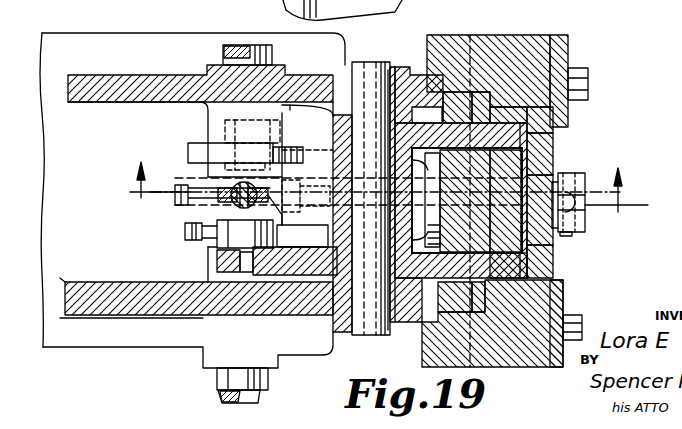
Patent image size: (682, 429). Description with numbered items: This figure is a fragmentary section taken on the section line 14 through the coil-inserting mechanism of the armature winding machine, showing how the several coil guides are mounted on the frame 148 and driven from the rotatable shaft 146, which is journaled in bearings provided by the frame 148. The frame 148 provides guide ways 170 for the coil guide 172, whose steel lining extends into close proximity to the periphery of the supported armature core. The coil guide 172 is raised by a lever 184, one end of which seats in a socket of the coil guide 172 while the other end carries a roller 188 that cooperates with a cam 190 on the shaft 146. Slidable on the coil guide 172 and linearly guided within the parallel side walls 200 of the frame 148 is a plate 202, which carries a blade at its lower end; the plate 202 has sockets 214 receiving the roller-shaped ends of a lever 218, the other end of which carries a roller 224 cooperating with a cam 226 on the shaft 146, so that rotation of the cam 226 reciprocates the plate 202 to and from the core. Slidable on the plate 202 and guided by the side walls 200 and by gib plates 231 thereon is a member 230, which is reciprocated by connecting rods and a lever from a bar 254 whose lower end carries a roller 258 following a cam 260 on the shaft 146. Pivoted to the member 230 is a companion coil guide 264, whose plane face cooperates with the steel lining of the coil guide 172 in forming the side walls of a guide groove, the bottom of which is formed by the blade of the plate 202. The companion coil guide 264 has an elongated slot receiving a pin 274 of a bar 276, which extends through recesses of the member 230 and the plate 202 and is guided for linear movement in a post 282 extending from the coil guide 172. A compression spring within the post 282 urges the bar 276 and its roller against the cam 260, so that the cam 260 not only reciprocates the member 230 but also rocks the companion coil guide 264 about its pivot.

The frame 148 is at (113, 74).
The rotatable shaft 146 is at (273, 55).
The lever 184 is at (333, 110).
The guide ways 170 is at (457, 93).
The coil guide 172 is at (481, 93).
The side walls 200 is at (510, 110).
The gib plates 231 is at (570, 53).
The roller 188 is at (223, 158).
The cam 190 is at (190, 152).
The post 282 is at (328, 150).
The sockets 214 is at (554, 126).
The member 230 is at (554, 143).
The plate 202 is at (556, 161).
The cam 260 is at (192, 183).
The Fig. 14 section line 14 is at (381, 187).
The roller 258 is at (218, 196).
The bar 276 is at (585, 210).
The cam 226 is at (186, 231).
The companion coil guide 264 is at (587, 226).
The bar 254 is at (280, 233).
The pin 274 is at (585, 237).
The roller 224 is at (218, 237).
The lever 218 is at (547, 272).